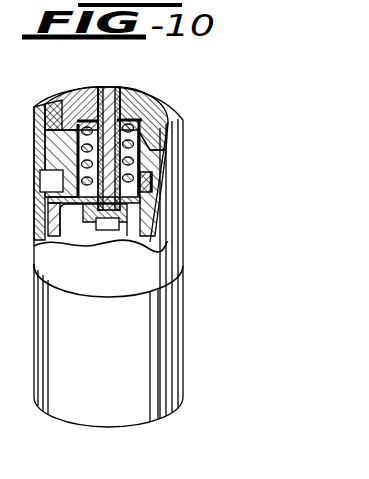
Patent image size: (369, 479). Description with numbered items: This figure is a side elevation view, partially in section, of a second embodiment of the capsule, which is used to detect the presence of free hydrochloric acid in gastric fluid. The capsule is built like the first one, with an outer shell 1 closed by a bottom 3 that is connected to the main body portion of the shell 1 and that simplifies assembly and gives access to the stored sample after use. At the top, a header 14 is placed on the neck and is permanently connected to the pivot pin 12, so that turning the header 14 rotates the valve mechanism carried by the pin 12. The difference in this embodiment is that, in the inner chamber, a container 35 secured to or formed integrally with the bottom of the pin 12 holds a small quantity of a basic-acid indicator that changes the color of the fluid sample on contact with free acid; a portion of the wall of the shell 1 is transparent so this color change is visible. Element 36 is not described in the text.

The outer shell 1 is at (170, 166).
The bottom 3 is at (152, 334).
The pivot pin 12 is at (104, 88).
The header 14 is at (137, 104).
The container 35 is at (146, 243).
The seal 36 is at (140, 253).